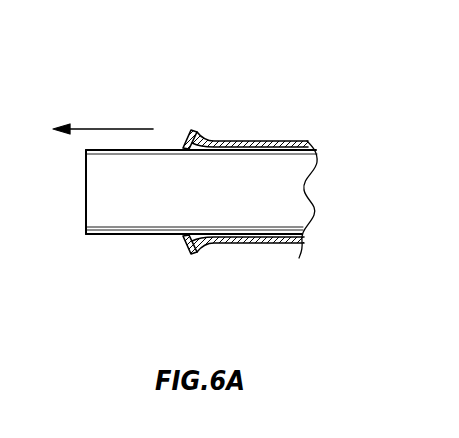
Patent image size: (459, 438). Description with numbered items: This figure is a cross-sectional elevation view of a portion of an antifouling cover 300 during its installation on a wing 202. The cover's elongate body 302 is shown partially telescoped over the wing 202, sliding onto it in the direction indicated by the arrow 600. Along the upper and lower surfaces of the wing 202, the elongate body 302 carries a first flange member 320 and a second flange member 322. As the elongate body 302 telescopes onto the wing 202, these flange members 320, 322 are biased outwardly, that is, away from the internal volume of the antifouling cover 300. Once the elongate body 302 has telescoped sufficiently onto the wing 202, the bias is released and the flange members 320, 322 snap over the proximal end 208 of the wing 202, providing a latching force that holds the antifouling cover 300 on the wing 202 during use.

The wing 202 is at (288, 180).
The proximal end 208 is at (86, 203).
The antifouling cover 300 is at (289, 165).
The elongate body 302 is at (305, 141).
The first flange member 320 is at (193, 130).
The second flange member 322 is at (193, 252).
The arrow 600 is at (112, 129).